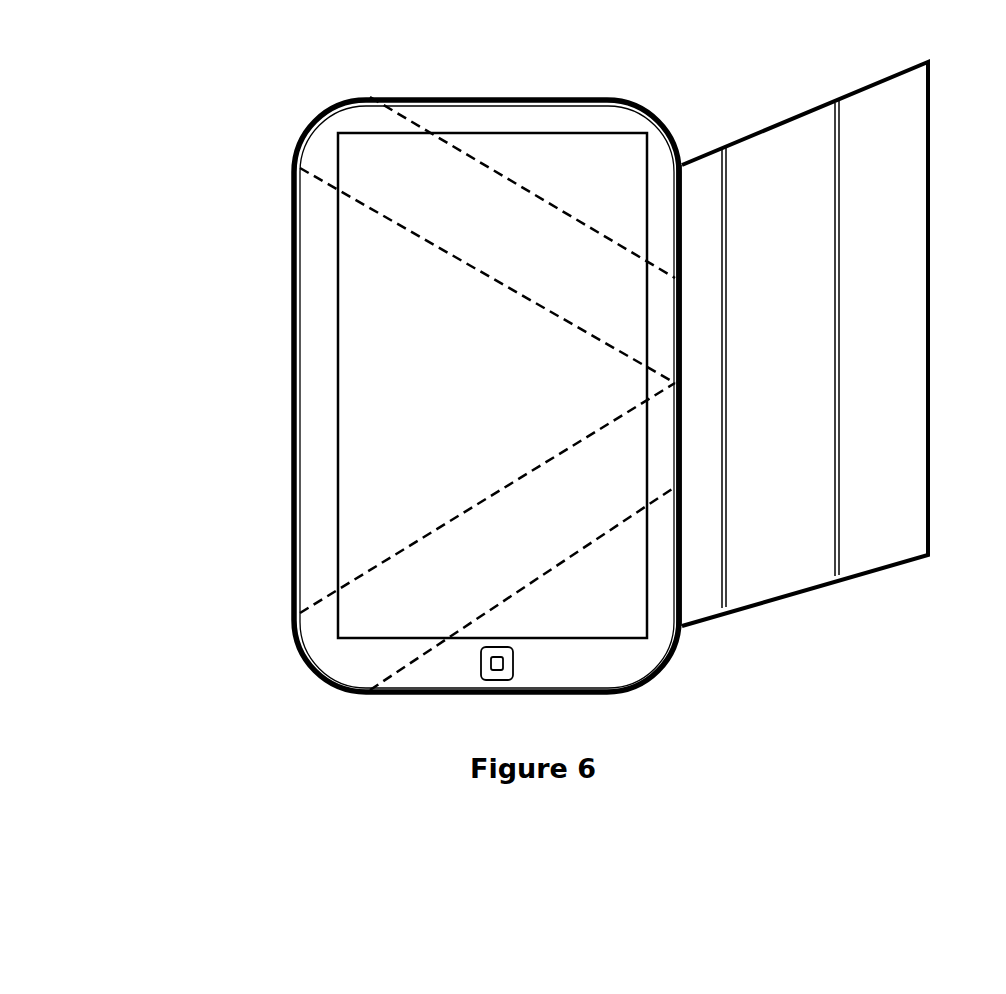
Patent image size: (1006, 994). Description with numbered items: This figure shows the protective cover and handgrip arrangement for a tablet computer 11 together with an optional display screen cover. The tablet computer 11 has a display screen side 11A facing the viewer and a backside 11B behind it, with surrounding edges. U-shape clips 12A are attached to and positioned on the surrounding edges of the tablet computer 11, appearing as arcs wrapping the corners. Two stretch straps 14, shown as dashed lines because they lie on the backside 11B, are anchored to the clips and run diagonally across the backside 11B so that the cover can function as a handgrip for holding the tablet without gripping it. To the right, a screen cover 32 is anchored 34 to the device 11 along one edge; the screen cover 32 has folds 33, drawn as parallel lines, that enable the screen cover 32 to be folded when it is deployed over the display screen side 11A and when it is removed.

The tablet computer 11 is at (295, 389).
The display screen side 11A is at (518, 100).
The backside 11B is at (487, 536).
The u-shape clip 12A is at (308, 123).
The stretch straps 14 is at (487, 276).
The screen cover 32 is at (888, 213).
The folds 33 is at (833, 193).
The anchor 34 is at (682, 493).